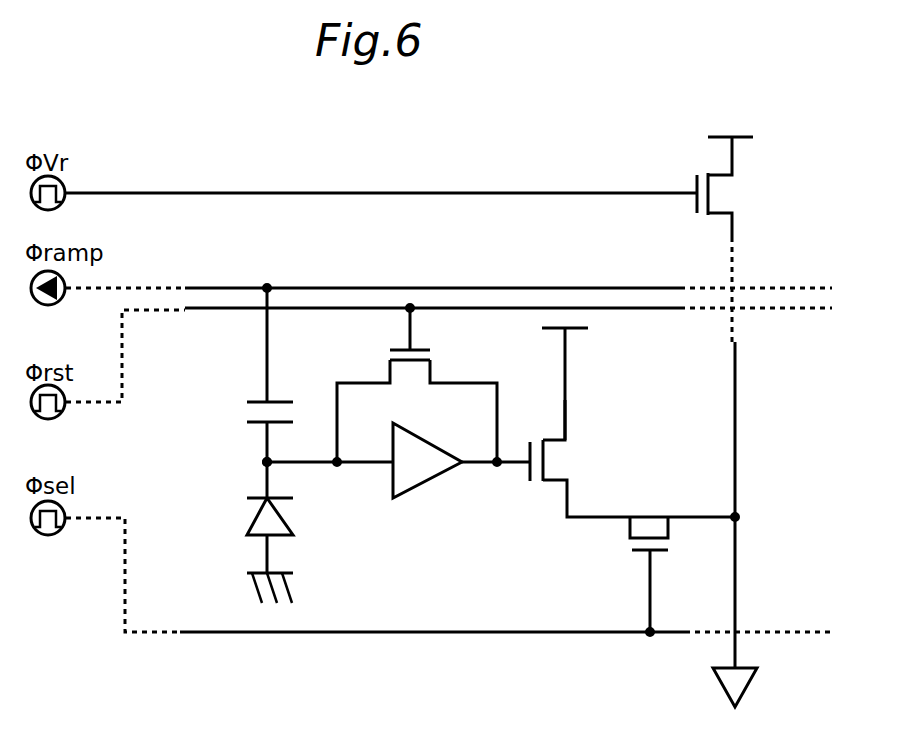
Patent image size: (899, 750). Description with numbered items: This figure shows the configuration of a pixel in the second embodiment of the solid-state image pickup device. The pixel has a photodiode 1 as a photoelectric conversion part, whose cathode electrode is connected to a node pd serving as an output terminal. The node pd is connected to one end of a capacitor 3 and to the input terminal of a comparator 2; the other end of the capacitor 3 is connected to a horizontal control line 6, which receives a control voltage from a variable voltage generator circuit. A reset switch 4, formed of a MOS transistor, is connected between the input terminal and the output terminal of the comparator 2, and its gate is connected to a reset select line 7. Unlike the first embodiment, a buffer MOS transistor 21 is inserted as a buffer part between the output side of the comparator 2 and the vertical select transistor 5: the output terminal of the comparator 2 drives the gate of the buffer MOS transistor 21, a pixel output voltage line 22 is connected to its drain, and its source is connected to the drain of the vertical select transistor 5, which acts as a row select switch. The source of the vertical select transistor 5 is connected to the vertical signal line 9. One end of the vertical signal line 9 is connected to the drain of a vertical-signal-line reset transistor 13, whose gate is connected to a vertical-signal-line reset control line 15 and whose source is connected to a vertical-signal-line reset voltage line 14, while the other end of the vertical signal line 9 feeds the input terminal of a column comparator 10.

The photodiode 1 is at (296, 515).
The comparator 2 is at (433, 494).
The capacitor 3 is at (249, 392).
The reset switch 4 is at (439, 358).
The vertical select transistor 5 is at (625, 557).
The horizontal control line 6 is at (235, 284).
The reset select line 7 is at (331, 304).
The vertical signal line 9 is at (742, 398).
The column comparator 10 is at (745, 680).
The vertical-signal-line reset transistor 13 is at (714, 169).
The vertical-signal-line reset voltage line 14 is at (733, 165).
The vertical-signal-line reset control line 15 is at (250, 188).
The buffer MOS transistor 21 is at (554, 492).
The pixel output voltage line 22 is at (567, 388).
The node pd is at (258, 482).